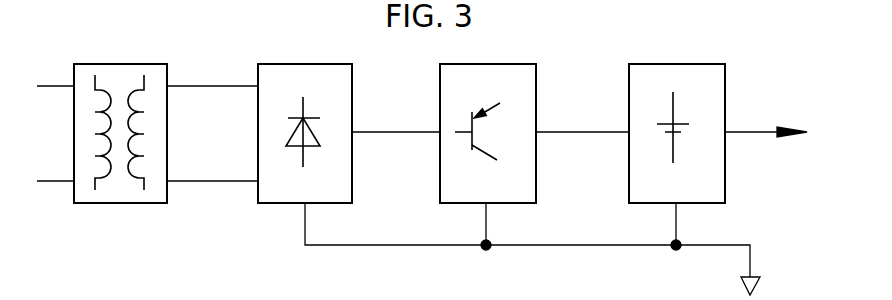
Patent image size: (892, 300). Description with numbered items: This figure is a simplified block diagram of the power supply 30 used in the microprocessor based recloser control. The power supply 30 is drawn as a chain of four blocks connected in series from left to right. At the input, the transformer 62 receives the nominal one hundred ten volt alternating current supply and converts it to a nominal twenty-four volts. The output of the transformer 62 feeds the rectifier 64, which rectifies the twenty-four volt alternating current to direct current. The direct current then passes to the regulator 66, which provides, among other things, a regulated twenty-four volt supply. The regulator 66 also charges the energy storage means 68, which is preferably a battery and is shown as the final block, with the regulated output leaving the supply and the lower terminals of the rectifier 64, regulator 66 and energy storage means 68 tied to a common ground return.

The power supply 30 is at (221, 53).
The transformer 62 is at (115, 203).
The rectifier 64 is at (275, 204).
The regulator 66 is at (450, 205).
The energy storage means 68 is at (637, 204).